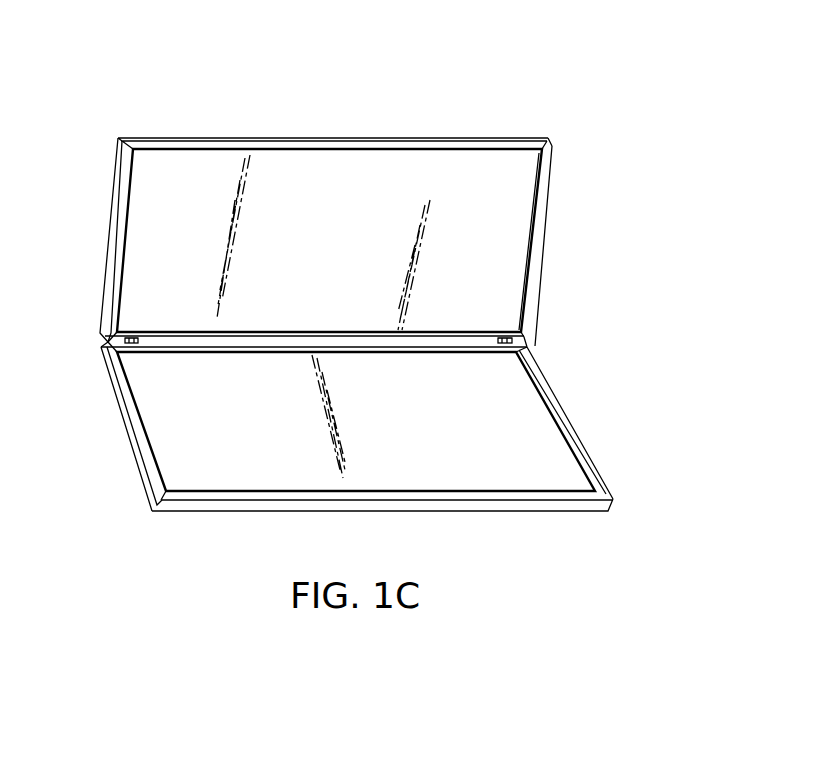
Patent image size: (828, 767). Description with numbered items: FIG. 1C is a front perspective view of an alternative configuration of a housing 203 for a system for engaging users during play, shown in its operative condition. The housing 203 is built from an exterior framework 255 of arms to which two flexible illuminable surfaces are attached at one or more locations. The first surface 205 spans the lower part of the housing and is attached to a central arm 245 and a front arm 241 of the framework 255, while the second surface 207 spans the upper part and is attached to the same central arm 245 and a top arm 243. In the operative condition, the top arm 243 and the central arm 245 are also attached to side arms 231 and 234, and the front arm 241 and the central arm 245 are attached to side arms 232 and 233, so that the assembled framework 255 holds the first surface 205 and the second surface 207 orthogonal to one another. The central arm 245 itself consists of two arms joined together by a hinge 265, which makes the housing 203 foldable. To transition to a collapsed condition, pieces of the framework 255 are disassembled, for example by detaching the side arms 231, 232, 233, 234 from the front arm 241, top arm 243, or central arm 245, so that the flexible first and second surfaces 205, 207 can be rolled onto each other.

The housing 203 is at (603, 60).
The exterior framework 255 is at (117, 136).
The top arm 243 is at (450, 137).
The side arm 231 is at (110, 222).
The side arm 234 is at (545, 212).
The second illuminable surface 207 is at (341, 252).
The side arm 232 is at (121, 413).
The side arm 233 is at (588, 443).
The front arm 241 is at (493, 511).
The first illuminable surface 205 is at (415, 438).
The hinge 265 is at (512, 342).
The central arm 245 is at (456, 329).